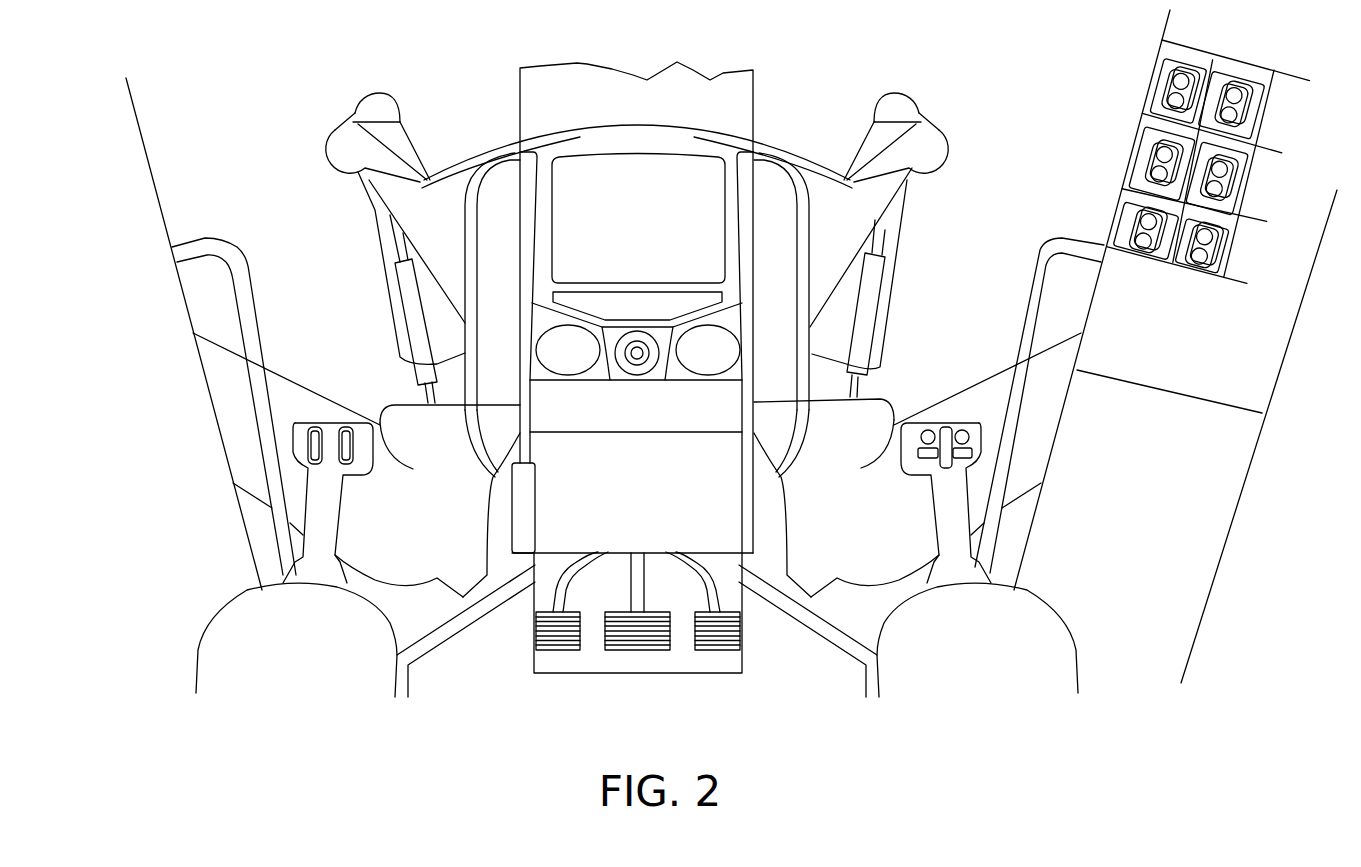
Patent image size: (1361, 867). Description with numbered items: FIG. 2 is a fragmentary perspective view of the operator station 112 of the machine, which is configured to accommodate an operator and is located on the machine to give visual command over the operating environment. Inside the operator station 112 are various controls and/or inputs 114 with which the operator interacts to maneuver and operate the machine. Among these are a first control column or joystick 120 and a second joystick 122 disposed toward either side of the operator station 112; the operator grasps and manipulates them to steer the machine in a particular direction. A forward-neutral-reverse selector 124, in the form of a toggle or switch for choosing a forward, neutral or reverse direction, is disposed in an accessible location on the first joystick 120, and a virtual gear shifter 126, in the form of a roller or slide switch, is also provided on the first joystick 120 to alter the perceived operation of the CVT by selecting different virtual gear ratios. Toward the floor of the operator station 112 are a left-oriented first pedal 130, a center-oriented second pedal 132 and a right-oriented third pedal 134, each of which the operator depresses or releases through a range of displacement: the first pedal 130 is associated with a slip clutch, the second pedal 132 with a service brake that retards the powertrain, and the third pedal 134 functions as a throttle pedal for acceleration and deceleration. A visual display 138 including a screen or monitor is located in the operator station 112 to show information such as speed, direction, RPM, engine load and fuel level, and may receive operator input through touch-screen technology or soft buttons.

The operator station 112 is at (980, 148).
The controls and/or inputs 114 is at (1132, 37).
The first control column or joystick 120 is at (323, 497).
The second joystick 122 is at (957, 505).
The forward-neutral-reverse (F-N-R) selector 124 is at (312, 440).
The virtual gear shifter 126 is at (349, 440).
The first pedal 130 is at (537, 630).
The second pedal 132 is at (634, 627).
The third pedal 134 is at (733, 635).
The visual display 138 is at (648, 143).